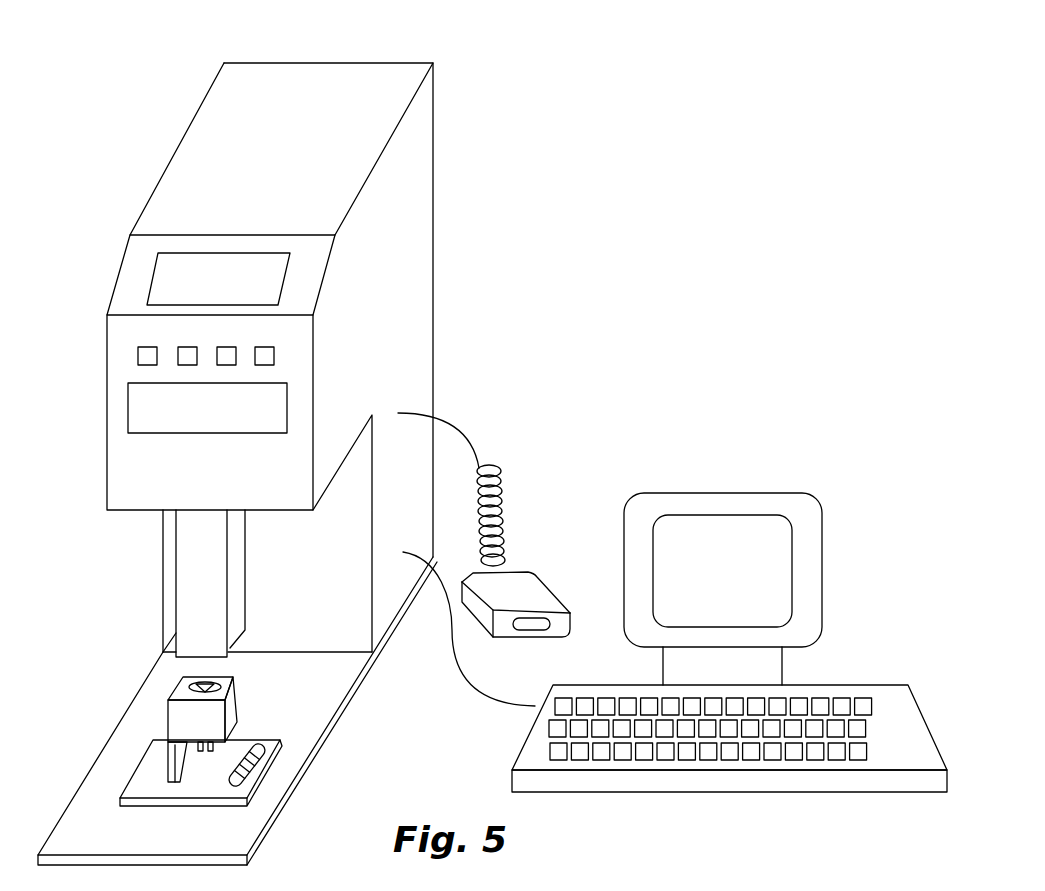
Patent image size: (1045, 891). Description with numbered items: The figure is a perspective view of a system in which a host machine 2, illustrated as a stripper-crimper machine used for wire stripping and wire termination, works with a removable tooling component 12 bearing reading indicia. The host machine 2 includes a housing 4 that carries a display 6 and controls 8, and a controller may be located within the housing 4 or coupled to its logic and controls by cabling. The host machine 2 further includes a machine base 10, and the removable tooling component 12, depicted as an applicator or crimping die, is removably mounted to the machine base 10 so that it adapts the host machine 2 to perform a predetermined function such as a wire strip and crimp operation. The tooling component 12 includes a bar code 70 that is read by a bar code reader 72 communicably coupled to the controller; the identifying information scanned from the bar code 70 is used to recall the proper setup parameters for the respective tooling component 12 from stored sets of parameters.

The host machine 2 is at (488, 58).
The housing 4 is at (412, 182).
The display 6 is at (157, 278).
The controls 8 is at (138, 357).
The machine base 10 is at (320, 703).
The removable tooling component 12 is at (178, 711).
The bar code 70 is at (253, 770).
The bar code reader 72 is at (512, 585).